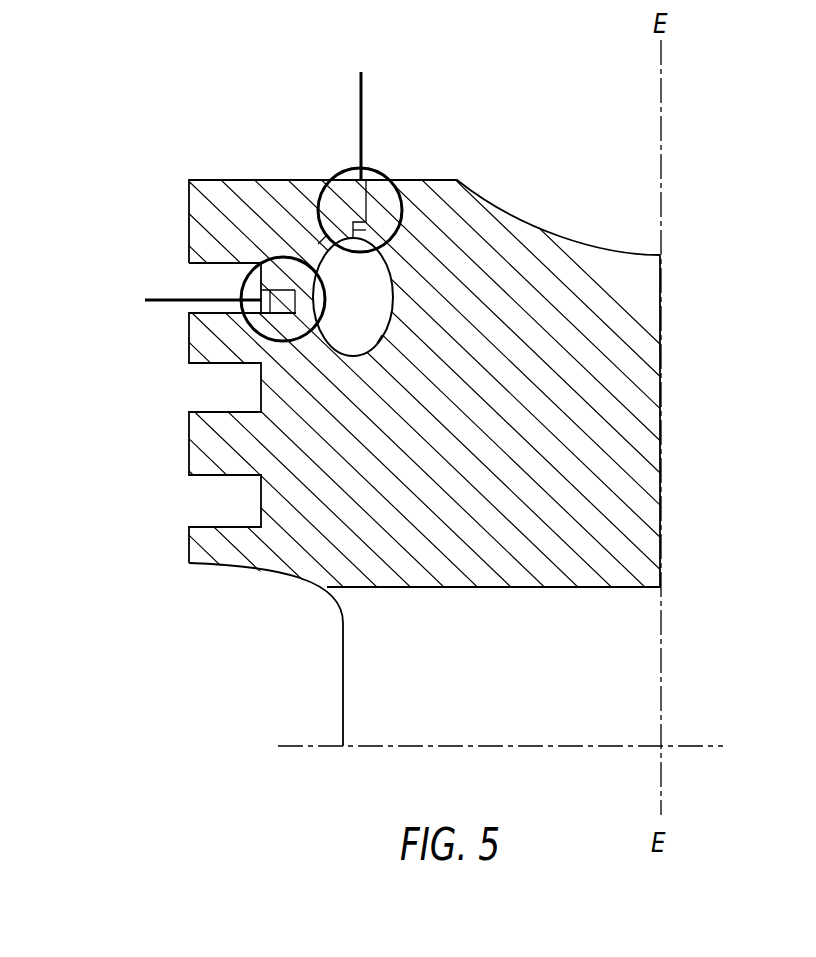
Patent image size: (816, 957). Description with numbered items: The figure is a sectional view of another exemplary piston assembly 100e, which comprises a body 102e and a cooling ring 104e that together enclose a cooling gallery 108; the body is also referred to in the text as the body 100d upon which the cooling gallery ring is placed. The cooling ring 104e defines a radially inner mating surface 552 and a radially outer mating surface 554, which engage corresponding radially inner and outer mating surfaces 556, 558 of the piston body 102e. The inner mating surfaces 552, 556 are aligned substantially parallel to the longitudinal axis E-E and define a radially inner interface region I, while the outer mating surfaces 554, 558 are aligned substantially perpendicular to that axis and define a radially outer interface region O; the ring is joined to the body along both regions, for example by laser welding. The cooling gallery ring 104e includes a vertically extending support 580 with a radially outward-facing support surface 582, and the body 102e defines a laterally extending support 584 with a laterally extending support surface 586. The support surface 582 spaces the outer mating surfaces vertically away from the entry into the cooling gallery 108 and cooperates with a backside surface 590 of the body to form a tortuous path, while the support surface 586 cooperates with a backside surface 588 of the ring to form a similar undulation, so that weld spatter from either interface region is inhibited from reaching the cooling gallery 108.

The piston 100d is at (140, 181).
The piston assembly 100e is at (561, 98).
The body 102e is at (287, 555).
The cooling ring 104e is at (207, 197).
The cooling gallery 108 is at (372, 311).
The radially inner mating surface 552 is at (370, 222).
The radially outer mating surface 554 is at (268, 302).
The radially inner mating surface 556 is at (342, 172).
The radially outer mating surface 558 is at (280, 258).
The vertically extending support 580 is at (377, 343).
The vertically extending support surface 582 is at (288, 312).
The laterally extending support 584 is at (358, 230).
The laterally extending support surface 586 is at (332, 178).
The backside surface 588 is at (322, 240).
The backside surface 590 is at (296, 313).